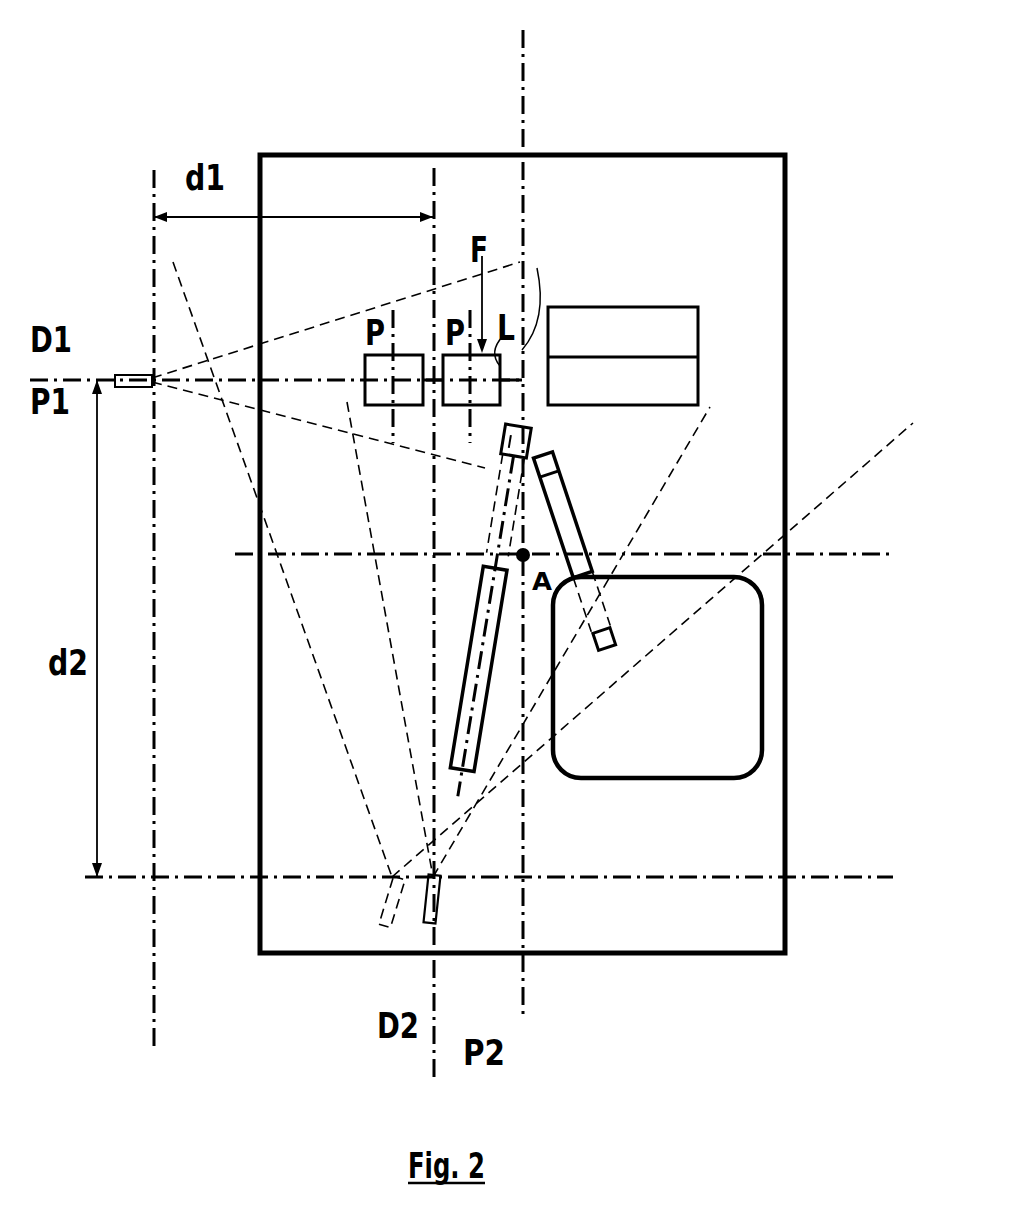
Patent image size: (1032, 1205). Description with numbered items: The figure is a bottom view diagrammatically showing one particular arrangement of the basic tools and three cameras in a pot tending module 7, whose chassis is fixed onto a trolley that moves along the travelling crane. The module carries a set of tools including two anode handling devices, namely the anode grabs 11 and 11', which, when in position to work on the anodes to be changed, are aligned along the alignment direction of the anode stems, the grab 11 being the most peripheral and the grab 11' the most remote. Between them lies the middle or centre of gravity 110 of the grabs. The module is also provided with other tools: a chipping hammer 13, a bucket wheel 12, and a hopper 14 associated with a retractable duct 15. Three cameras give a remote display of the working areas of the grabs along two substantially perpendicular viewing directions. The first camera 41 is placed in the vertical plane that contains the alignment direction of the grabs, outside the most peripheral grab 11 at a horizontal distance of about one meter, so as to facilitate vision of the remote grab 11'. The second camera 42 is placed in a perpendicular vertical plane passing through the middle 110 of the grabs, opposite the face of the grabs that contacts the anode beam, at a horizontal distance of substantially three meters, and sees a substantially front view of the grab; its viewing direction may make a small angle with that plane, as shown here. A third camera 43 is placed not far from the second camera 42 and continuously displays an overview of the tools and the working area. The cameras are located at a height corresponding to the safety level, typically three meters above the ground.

The pot tending module 7 is at (262, 108).
The anode grab 11 is at (361, 376).
The anode grab 11' is at (453, 409).
The middle of the anode grabs 110 is at (430, 374).
The bucket wheel 12 is at (623, 332).
The chipping hammer 13 is at (467, 653).
The hopper 14 is at (635, 740).
The retractable duct 15 is at (578, 533).
The first camera 41 is at (133, 385).
The second camera 42 is at (437, 902).
The third camera 43 is at (383, 902).